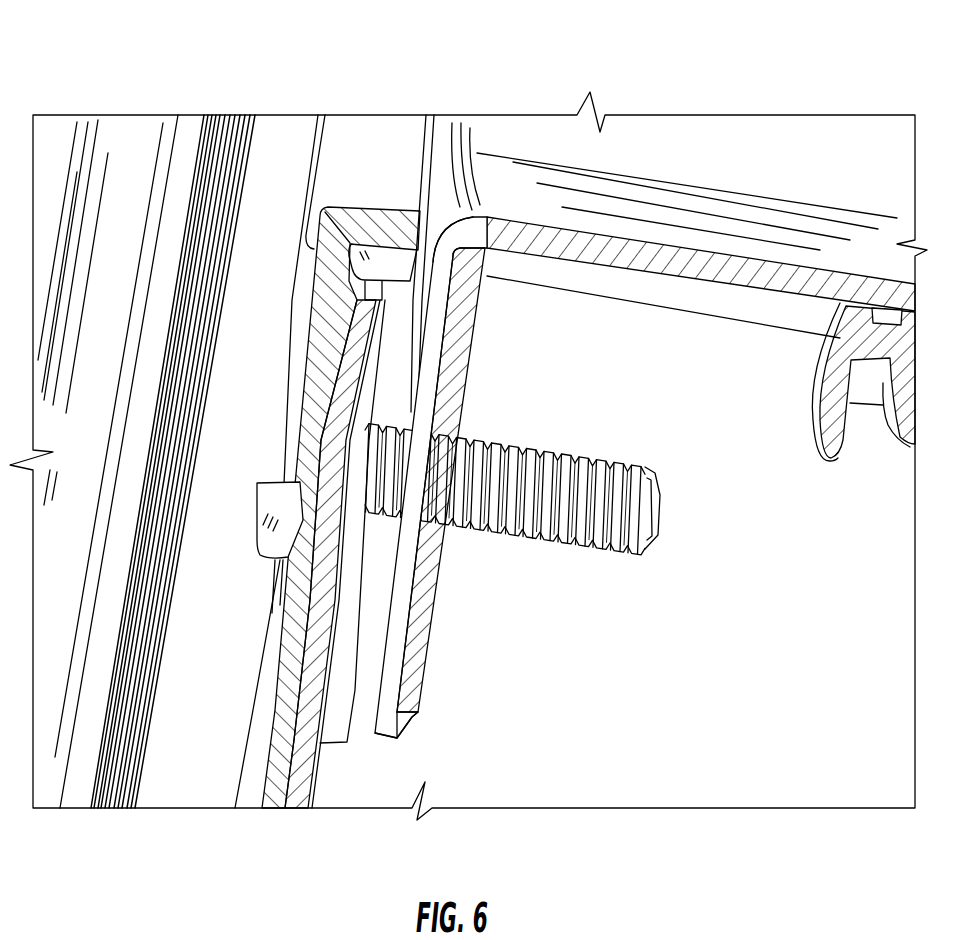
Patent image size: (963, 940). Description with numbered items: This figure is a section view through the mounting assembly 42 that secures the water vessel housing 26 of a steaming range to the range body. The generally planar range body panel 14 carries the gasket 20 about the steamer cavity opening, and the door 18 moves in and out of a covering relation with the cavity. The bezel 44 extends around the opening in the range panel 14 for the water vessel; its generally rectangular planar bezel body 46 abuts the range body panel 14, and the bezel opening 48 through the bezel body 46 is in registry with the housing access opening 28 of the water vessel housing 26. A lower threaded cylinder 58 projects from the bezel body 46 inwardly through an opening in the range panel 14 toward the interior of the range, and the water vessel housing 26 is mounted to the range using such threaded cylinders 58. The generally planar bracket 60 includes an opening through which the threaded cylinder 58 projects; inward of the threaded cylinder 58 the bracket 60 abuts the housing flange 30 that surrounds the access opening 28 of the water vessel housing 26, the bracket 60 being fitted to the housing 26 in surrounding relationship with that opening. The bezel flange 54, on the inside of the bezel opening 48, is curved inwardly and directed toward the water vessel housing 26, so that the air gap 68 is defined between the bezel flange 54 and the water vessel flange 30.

The body panel 14 is at (291, 810).
The door 18 is at (131, 140).
The gasket 20 is at (232, 115).
The water vessel housing 26 is at (737, 143).
The housing access opening 28 is at (457, 150).
The housing flange 30 is at (455, 315).
The mounting assembly 42 is at (537, 586).
The bezel 44 is at (271, 367).
The bezel body 46 is at (283, 484).
The bezel opening 48 is at (373, 159).
The bezel flange 54 is at (345, 232).
The threaded cylinder 58 is at (580, 453).
The bracket 60 is at (412, 652).
The air gap 68 is at (432, 223).